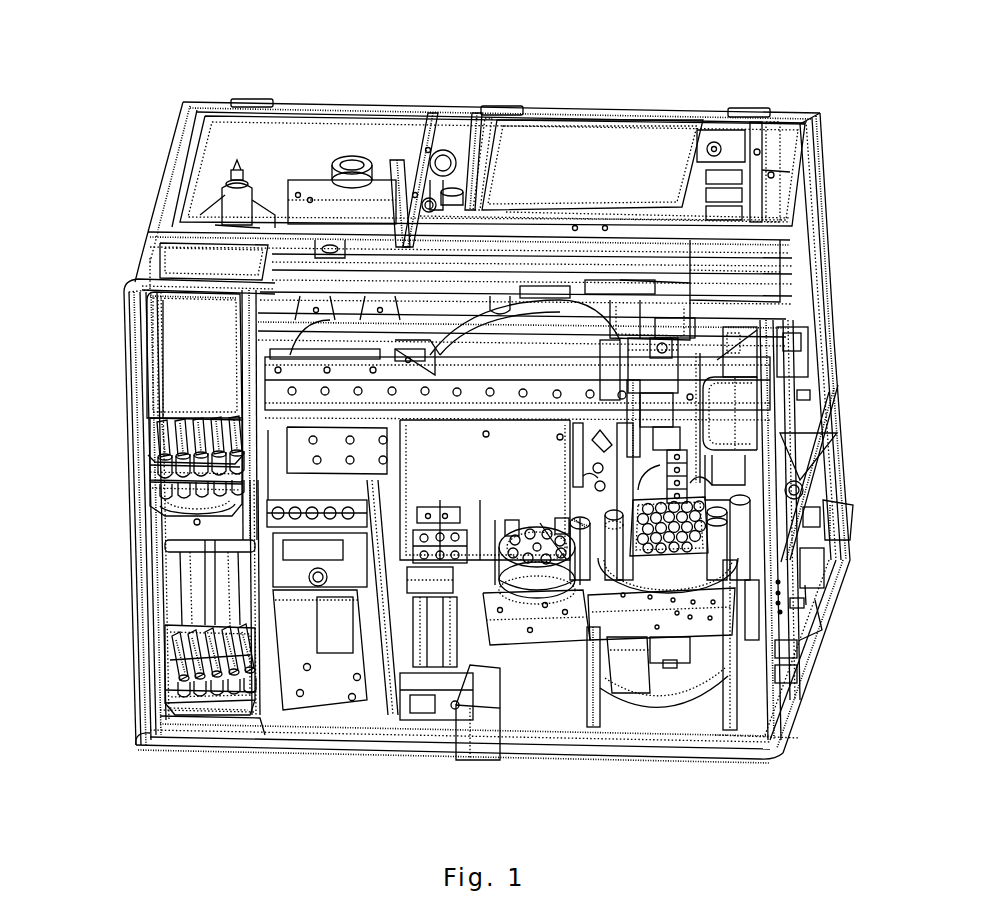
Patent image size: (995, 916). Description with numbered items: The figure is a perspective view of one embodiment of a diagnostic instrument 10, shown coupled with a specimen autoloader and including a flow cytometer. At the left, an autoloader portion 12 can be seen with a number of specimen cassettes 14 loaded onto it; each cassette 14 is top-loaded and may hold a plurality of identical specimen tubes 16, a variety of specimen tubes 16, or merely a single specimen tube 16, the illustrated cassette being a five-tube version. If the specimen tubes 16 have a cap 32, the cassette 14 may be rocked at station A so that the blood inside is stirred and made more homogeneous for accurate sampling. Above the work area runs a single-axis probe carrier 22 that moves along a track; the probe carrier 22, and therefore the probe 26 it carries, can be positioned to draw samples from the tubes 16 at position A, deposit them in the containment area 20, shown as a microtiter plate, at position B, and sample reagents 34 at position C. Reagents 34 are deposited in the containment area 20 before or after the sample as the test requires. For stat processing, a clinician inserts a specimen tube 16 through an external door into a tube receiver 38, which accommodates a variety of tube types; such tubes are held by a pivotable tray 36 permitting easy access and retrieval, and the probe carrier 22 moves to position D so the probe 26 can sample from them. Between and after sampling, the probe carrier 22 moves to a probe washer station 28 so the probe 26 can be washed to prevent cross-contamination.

The diagnostic instrument 10 is at (490, 376).
The autoloader portion 12 is at (441, 432).
The specimen cassettes 14 is at (146, 563).
The specimen tubes 16 is at (198, 432).
The containment area 20 is at (773, 510).
The probe carrier 22 is at (759, 277).
The probe 26 is at (765, 457).
The probe washer station 28 is at (662, 676).
The cap 32 is at (149, 383).
The reagents 34 is at (742, 555).
The pivotable tray 36 is at (398, 681).
The tube receiver 38 is at (485, 490).